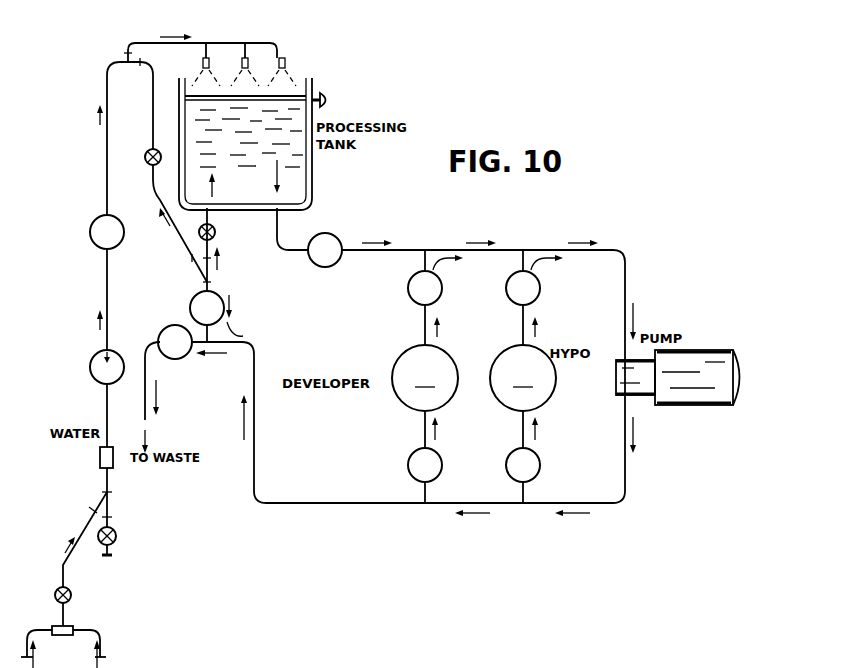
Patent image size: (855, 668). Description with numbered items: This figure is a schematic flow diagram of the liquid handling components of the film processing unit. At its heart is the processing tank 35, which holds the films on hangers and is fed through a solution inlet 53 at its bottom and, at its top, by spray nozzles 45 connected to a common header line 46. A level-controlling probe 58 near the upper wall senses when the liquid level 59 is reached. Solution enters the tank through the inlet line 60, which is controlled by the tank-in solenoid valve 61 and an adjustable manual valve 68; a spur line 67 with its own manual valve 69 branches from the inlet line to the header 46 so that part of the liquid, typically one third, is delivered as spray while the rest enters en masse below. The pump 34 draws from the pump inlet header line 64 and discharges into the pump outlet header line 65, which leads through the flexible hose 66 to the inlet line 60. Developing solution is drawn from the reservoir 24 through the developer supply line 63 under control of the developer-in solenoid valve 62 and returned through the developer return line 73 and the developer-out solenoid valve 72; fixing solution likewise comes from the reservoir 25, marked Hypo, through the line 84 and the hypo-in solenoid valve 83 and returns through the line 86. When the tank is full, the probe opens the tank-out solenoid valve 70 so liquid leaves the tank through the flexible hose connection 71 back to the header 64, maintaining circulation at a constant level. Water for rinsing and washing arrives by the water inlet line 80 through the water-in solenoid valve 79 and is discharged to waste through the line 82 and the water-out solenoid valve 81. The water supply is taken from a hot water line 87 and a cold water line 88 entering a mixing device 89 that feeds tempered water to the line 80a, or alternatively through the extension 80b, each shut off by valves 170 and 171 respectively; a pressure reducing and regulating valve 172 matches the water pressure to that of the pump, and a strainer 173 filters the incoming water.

The common header line 46 is at (220, 43).
The spray nozzles 45 is at (250, 62).
The liquid level 59 is at (290, 95).
The level-controlling probe 58 is at (328, 93).
The processing tank 35 is at (313, 190).
The manually actuated valve 69 is at (146, 155).
The spur line 67 is at (150, 184).
The "water in" solenoid valve 79 is at (95, 243).
The water inlet line 80 is at (105, 296).
The pressure reducing and regulating valve 172 is at (90, 370).
The strainer 173 is at (99, 462).
The line 80a is at (100, 504).
The extension of the line 80 80b is at (110, 506).
The valve 171 is at (117, 536).
The valve 170 is at (56, 590).
The mixing device 89 is at (70, 627).
The cold water line 88 is at (540, 462).
The hot water line 87 is at (101, 638).
The solution inlet 53 is at (207, 208).
The inlet line 60 is at (210, 218).
The manually actuated valve 68 is at (215, 236).
The "tank in" solenoid valve 61 is at (218, 297).
The "water out" solenoid valve 81 is at (165, 330).
The line going to waste 82 is at (147, 370).
The flexible hose 66 is at (255, 420).
The flexible hose connection 71 is at (278, 236).
The "tank out" solenoid valve 70 is at (337, 240).
The pump inlet header line 64 is at (510, 250).
The "developer in" solenoid valve 62 is at (410, 280).
The developer supply line 63 is at (424, 320).
The reservoir for the developing solution 24 is at (425, 378).
The developer return line 73 is at (424, 424).
The "developer out" solenoid valve 72 is at (409, 467).
The "hypo in" solenoid valve 83 is at (540, 285).
The line 84 is at (522, 326).
The reservoir for the fixing solution 25 is at (523, 378).
The line 86 is at (522, 437).
The pump outlet header line 65 is at (513, 503).
The pump 34 is at (668, 405).